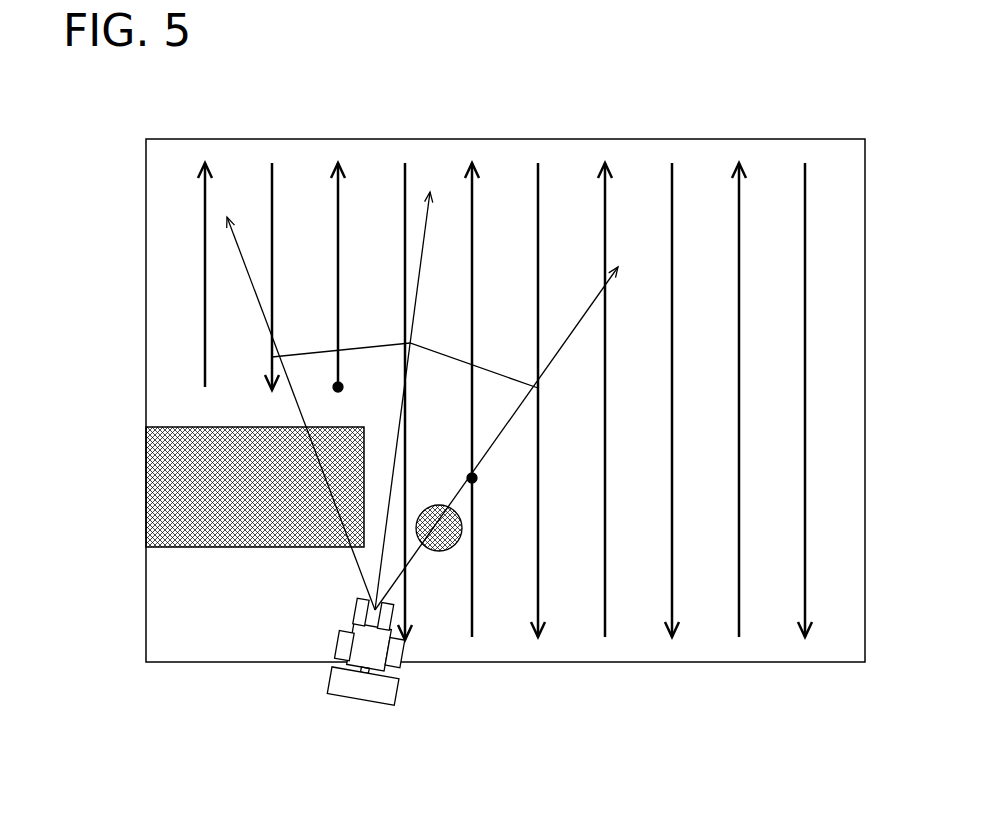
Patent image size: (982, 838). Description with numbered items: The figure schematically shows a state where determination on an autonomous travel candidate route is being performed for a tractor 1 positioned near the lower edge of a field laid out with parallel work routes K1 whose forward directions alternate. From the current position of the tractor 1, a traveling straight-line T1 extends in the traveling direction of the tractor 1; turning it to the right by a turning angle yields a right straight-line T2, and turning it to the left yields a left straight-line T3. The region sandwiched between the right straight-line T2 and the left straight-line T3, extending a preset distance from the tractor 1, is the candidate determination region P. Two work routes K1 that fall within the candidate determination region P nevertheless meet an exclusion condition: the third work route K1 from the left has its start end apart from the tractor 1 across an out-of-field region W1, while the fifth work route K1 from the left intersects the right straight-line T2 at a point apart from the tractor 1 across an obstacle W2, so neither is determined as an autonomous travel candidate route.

The tractor 1 is at (350, 684).
The work route K1 is at (338, 217).
The out-of-field region W1 is at (168, 486).
The obstacle W2 is at (444, 553).
The candidate determination region P is at (487, 400).
The traveling straight-line T1 is at (420, 263).
The right straight-line T2 is at (495, 440).
The left straight-line T3 is at (261, 307).